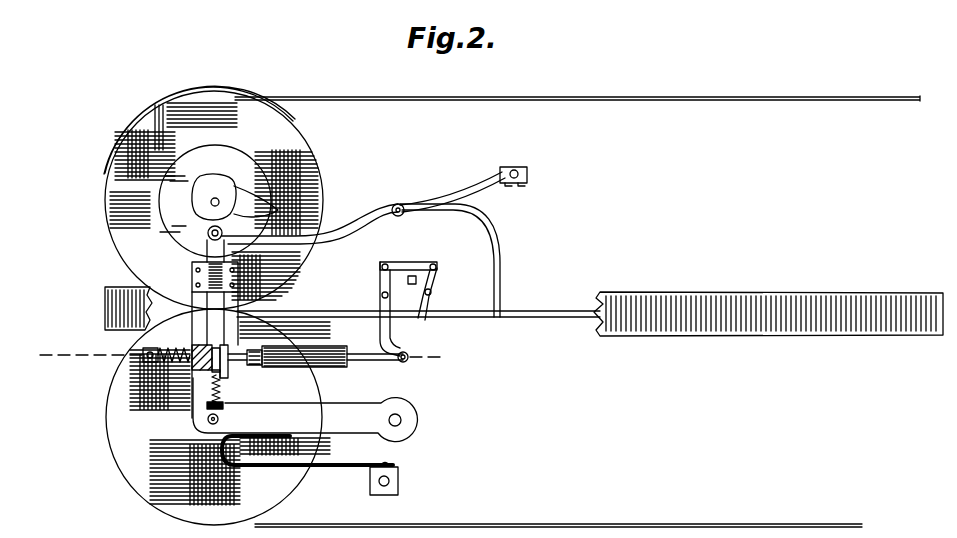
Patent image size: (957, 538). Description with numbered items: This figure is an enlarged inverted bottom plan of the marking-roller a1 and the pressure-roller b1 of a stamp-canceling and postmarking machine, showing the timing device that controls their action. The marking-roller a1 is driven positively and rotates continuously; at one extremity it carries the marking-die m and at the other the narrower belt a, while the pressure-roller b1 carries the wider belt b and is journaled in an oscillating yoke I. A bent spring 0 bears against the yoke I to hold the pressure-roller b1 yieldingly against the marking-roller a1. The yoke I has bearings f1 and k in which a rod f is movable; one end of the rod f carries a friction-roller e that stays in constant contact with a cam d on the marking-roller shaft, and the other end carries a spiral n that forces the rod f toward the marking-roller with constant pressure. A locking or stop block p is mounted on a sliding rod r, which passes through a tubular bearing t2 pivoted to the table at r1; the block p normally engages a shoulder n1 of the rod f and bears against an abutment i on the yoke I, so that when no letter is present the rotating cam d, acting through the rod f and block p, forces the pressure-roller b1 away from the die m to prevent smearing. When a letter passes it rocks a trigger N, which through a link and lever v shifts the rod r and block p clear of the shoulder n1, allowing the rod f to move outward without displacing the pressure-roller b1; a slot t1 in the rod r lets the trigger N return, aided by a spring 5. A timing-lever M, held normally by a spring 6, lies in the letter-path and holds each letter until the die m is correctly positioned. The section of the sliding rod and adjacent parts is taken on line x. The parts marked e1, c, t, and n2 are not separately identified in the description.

The belt a is at (577, 88).
The marking-die m is at (153, 112).
The marking-roller a1 is at (214, 200).
The cam d is at (214, 197).
The cam point e1 is at (258, 205).
The friction-roller e is at (224, 238).
The bearing f1 is at (192, 278).
The rod f is at (215, 329).
The spring 6 is at (463, 189).
The timing-lever M is at (464, 260).
The spring 5 is at (408, 282).
The lever v is at (390, 340).
The trigger N is at (426, 318).
The fixed block c is at (768, 314).
The tubular bearing t2 is at (296, 346).
The pivot r1 is at (318, 348).
The slot t1 is at (404, 362).
The section line x is at (234, 355).
The shoulder n1 is at (192, 348).
The spring n2 is at (172, 363).
The locking block p is at (205, 366).
The abutment i is at (212, 374).
The rod t is at (222, 372).
The rod r is at (236, 370).
The spiral n is at (221, 392).
The bearing k is at (219, 416).
The pressure-roller b1 is at (150, 412).
The yoke I is at (372, 405).
The bent spring 0 is at (310, 465).
The belt b is at (558, 515).